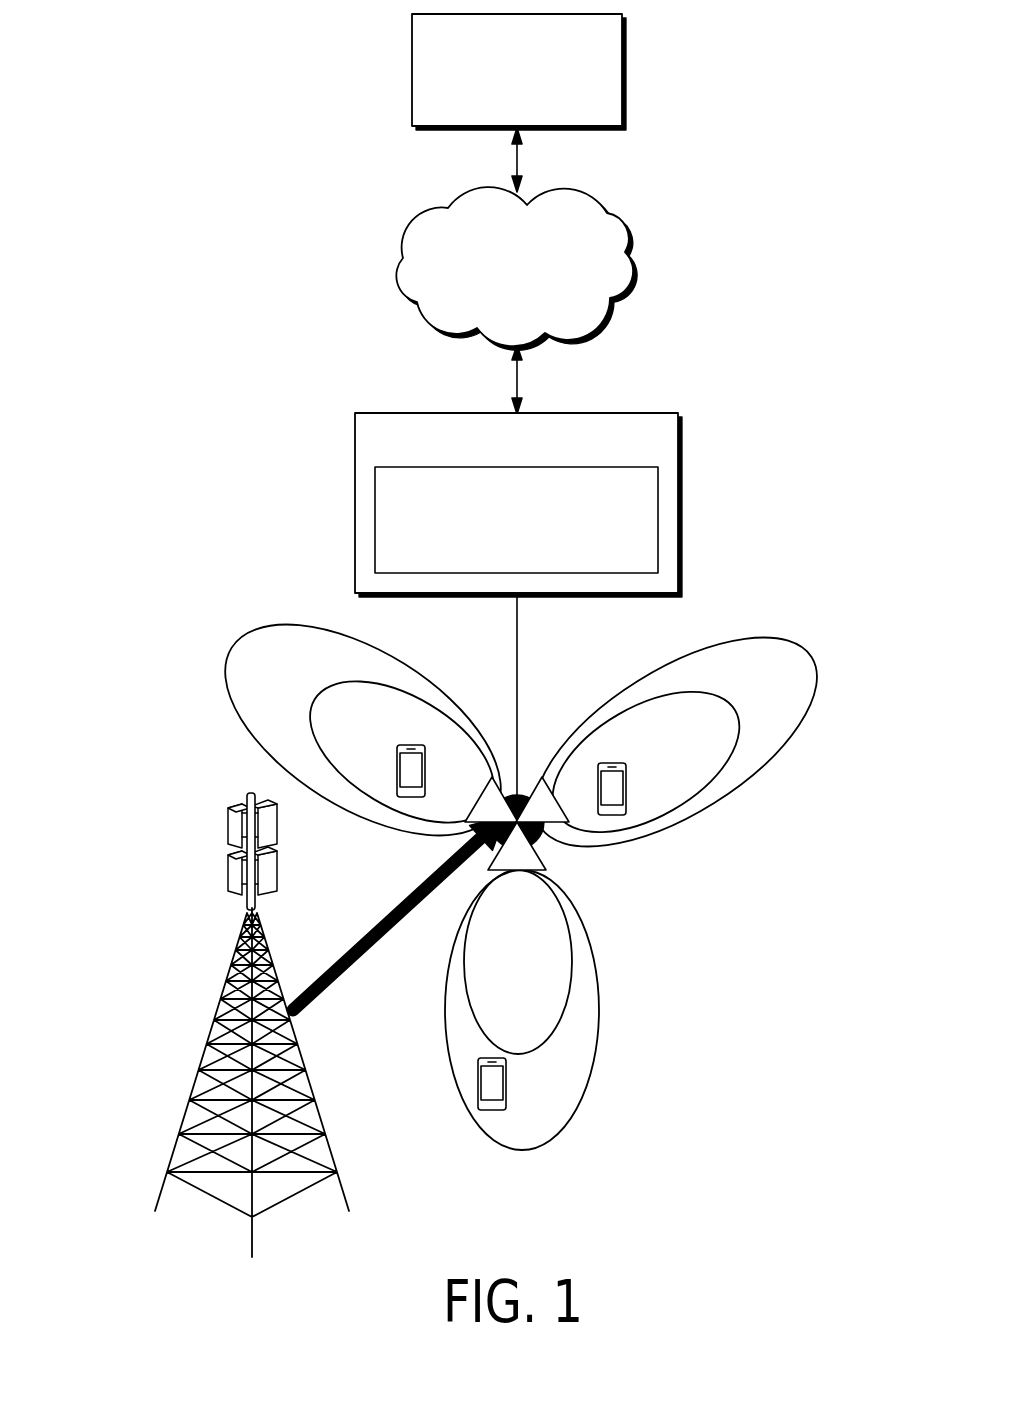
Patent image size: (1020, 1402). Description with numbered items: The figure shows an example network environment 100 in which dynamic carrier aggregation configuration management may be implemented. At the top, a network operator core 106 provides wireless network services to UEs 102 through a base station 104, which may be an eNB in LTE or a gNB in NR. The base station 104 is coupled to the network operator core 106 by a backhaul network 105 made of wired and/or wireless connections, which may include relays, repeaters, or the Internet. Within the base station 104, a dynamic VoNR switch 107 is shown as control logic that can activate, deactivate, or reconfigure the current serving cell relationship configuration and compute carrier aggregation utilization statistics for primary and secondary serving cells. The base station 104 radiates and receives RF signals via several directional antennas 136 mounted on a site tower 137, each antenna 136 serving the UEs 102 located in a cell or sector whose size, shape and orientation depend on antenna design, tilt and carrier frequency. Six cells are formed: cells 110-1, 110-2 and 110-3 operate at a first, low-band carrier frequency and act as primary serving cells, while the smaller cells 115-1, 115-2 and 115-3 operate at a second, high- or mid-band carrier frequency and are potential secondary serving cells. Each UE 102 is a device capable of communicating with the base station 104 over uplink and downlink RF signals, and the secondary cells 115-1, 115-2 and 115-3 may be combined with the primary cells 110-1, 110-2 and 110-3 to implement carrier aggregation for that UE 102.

The network environment 100 is at (805, 62).
The UE 102 is at (410, 798).
The base station 104 is at (618, 455).
The backhaul network 105 is at (497, 291).
The network operator core 106 is at (497, 111).
The dynamic VoNR switch 107 is at (627, 561).
The cell 110-1 is at (795, 700).
The cell 110-2 is at (580, 1087).
The cell 110-3 is at (307, 682).
The cell 115-1 is at (703, 752).
The cell 115-2 is at (545, 967).
The cell 115-3 is at (395, 737).
The directional antenna 136 is at (500, 790).
The site tower 137 is at (338, 1080).